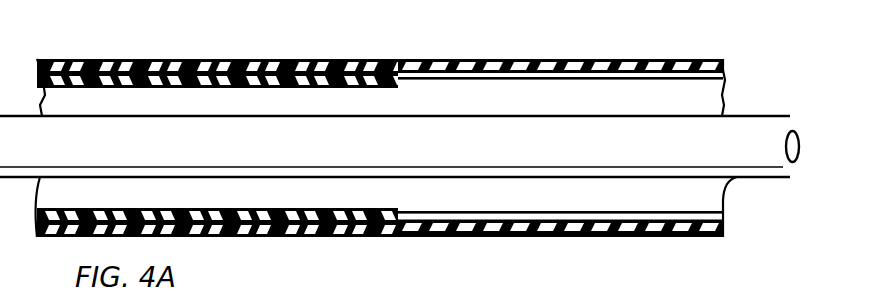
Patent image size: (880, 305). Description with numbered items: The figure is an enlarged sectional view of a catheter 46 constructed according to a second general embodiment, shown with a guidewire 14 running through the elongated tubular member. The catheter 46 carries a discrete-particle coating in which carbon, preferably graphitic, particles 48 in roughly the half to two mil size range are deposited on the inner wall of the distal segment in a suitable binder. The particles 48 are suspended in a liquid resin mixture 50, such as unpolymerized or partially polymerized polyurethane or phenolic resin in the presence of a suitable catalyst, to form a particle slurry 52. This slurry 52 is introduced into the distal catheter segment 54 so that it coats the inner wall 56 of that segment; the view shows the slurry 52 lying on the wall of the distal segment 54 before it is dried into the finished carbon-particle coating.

The guidewire 14 is at (534, 160).
The catheter 46 is at (340, 62).
The graphite particles 48 is at (609, 62).
The liquid resin mixture 50 is at (590, 79).
The particle slurry 52 is at (500, 212).
The distal catheter segment 54 is at (595, 235).
The inner wall 56 is at (530, 221).